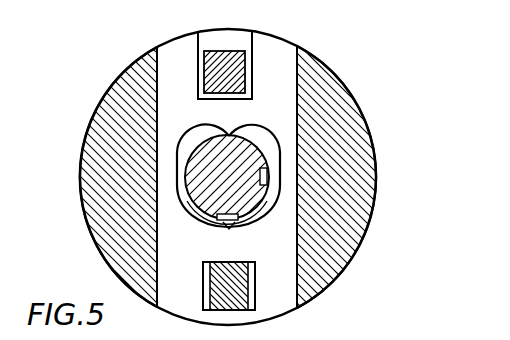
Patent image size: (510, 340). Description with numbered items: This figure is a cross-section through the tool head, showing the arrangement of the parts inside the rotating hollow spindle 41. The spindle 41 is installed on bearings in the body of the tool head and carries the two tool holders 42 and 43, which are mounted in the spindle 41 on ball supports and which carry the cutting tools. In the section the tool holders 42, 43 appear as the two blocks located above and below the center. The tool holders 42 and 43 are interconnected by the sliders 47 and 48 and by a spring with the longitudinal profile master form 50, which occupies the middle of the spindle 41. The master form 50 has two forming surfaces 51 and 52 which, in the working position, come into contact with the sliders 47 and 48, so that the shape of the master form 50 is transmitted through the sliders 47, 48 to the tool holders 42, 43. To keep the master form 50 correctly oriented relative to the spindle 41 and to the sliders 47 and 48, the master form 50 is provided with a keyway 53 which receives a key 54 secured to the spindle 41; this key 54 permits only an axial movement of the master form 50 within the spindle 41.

The hollow spindle 41 is at (115, 86).
The tool holder 42 is at (237, 293).
The tool holder 43 is at (237, 56).
The slider 47 is at (287, 68).
The slider 48 is at (230, 226).
The longitudinal profile master form 50 is at (195, 186).
The forming surface 51 is at (217, 134).
The forming surface 52 is at (240, 221).
The keyway 53 is at (259, 150).
The key 54 is at (268, 178).